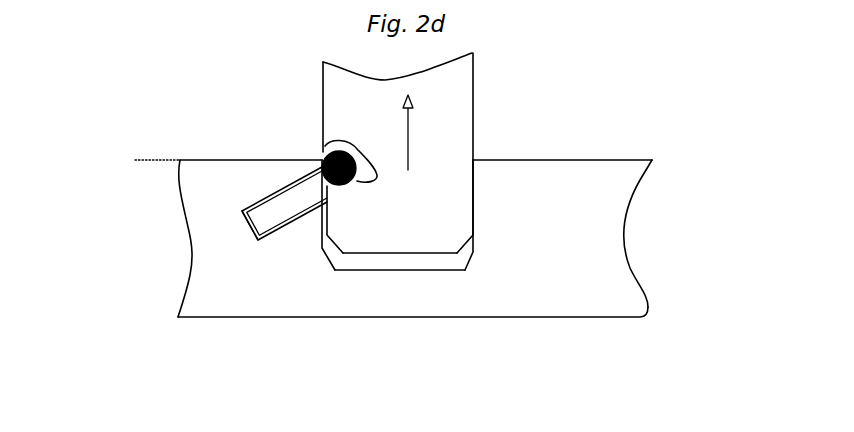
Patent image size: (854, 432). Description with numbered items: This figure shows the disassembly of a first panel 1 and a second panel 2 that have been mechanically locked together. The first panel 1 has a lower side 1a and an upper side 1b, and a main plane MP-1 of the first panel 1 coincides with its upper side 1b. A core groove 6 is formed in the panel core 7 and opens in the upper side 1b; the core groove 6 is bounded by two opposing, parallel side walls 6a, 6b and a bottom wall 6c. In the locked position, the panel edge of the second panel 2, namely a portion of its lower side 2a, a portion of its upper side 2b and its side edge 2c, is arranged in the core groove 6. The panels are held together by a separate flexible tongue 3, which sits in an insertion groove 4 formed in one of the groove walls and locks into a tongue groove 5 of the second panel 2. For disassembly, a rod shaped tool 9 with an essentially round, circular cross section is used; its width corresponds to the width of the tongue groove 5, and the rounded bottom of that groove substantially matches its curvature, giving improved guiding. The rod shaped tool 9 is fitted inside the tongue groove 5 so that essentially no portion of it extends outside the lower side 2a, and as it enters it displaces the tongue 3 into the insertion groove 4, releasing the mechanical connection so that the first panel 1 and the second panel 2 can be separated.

The first panel 1 is at (202, 225).
The lower side of the first panel 1a is at (597, 317).
The upper side of the first panel 1b is at (508, 162).
The second panel 2 is at (383, 187).
The lower side of the second panel 2a is at (322, 81).
The upper side of the second panel 2b is at (473, 80).
The side edge of the second panel 2c is at (418, 253).
The flexible tongue 3 is at (290, 196).
The insertion groove 4 is at (250, 233).
The tongue groove 5 is at (324, 146).
The core groove 6 is at (398, 245).
The side wall of the core groove 6a is at (325, 250).
The side wall of the core groove 6b is at (473, 243).
The bottom wall of the core groove 6c is at (380, 272).
The panel core 7 is at (602, 240).
The rod shaped tool 9 is at (353, 185).
The main plane of the first panel MP-1 is at (127, 161).